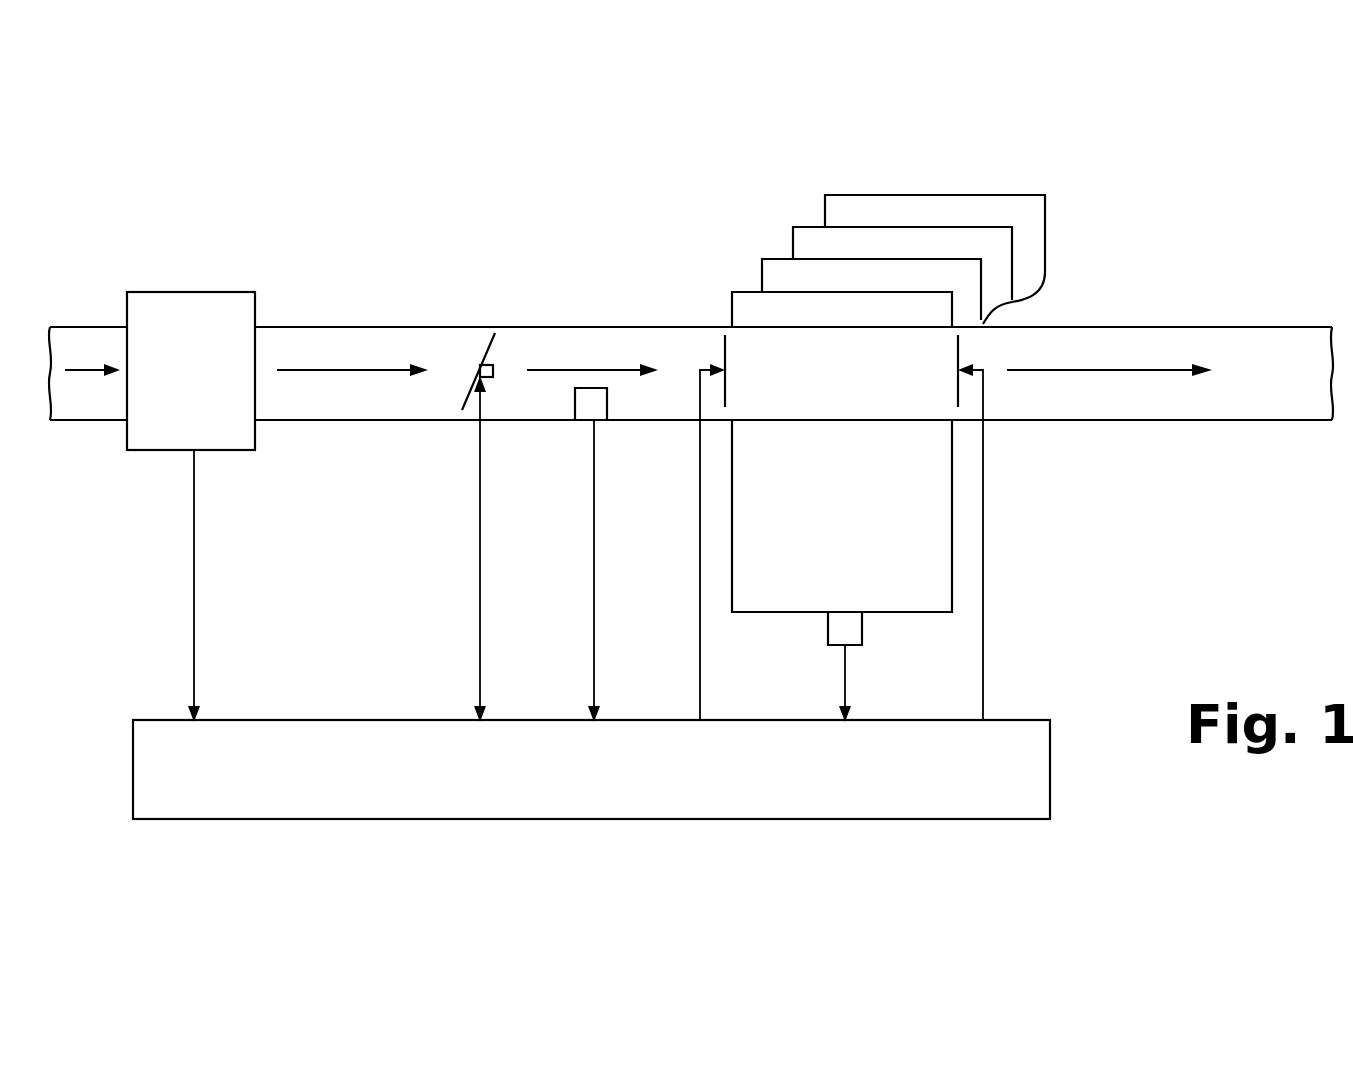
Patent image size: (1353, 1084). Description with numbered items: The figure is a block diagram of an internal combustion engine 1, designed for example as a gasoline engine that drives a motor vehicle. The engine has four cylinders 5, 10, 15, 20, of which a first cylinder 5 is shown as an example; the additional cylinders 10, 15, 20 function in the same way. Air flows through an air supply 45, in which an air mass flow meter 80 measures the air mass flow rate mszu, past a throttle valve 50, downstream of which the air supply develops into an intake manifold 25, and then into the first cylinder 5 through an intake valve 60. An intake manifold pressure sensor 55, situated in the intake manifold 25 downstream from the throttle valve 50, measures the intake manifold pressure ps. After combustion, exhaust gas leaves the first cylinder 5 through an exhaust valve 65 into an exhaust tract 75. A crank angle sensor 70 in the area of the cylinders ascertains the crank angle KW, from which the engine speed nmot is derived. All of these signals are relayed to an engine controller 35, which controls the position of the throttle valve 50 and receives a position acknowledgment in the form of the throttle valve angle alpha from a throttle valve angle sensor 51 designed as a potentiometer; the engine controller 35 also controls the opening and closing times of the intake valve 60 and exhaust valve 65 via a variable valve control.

The internal combustion engine 1 is at (668, 221).
The first cylinder 5 is at (935, 572).
The cylinder 10 is at (882, 275).
The cylinder 15 is at (937, 243).
The cylinder 20 is at (990, 205).
The intake manifold 25 is at (573, 343).
The engine controller 35 is at (577, 805).
The air supply 45 is at (85, 343).
The throttle valve 50 is at (485, 352).
The throttle valve angle sensor 51 is at (497, 363).
The intake manifold pressure sensor 55 is at (588, 410).
The intake valve 60 is at (722, 352).
The exhaust valve 65 is at (958, 387).
The crank angle sensor 70 is at (858, 628).
The exhaust tract 75 is at (1135, 340).
The air mass flow meter 80 is at (183, 307).